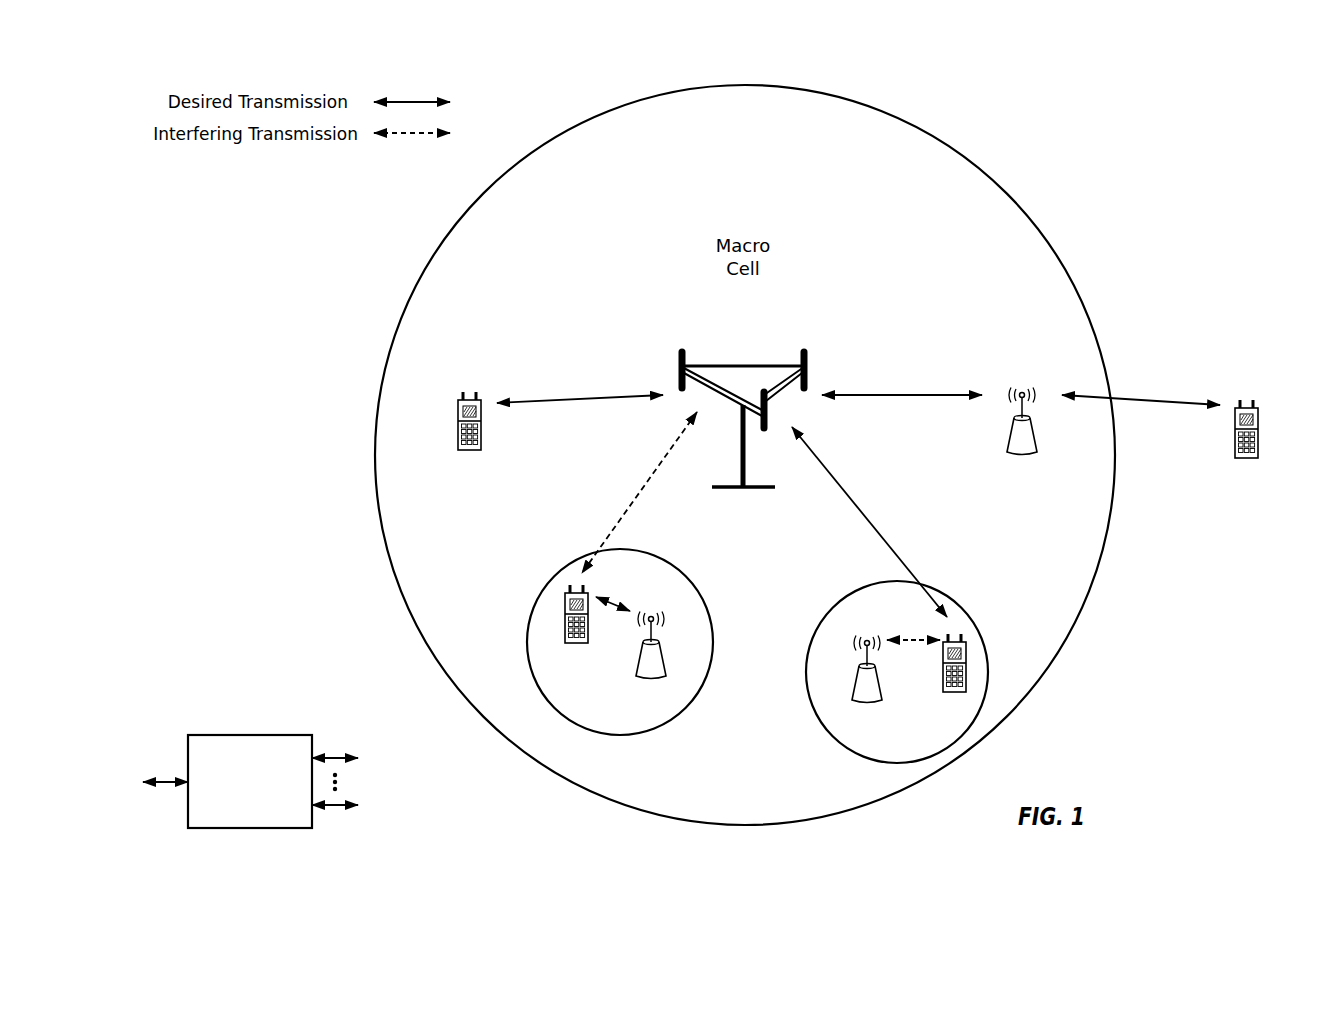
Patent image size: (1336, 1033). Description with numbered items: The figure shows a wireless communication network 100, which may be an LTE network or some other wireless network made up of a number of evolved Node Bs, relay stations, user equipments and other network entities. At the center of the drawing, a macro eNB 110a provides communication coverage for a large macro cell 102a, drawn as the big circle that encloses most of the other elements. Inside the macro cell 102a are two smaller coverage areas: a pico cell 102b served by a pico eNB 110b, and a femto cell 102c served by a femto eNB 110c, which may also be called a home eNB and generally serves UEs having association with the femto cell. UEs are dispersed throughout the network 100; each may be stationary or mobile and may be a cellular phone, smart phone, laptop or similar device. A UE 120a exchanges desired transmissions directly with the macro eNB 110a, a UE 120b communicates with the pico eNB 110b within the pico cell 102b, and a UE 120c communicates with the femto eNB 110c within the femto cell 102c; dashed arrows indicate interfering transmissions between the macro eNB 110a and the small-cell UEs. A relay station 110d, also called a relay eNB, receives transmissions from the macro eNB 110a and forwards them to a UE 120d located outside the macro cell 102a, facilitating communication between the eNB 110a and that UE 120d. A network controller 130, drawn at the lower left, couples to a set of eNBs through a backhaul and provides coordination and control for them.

The wireless communication network 100 is at (1176, 146).
The macro cell 102a is at (1000, 165).
The pico cell 102b is at (691, 582).
The femto cell 102c is at (825, 611).
The macro eNB 110a is at (740, 365).
The pico eNB 110b is at (665, 668).
The femto eNB 110c is at (853, 688).
The relay station 110d is at (1023, 392).
The UE 120a is at (458, 408).
The UE 120b is at (565, 636).
The UE 120c is at (943, 682).
The UE 120d is at (1258, 420).
The network controller 130 is at (246, 735).